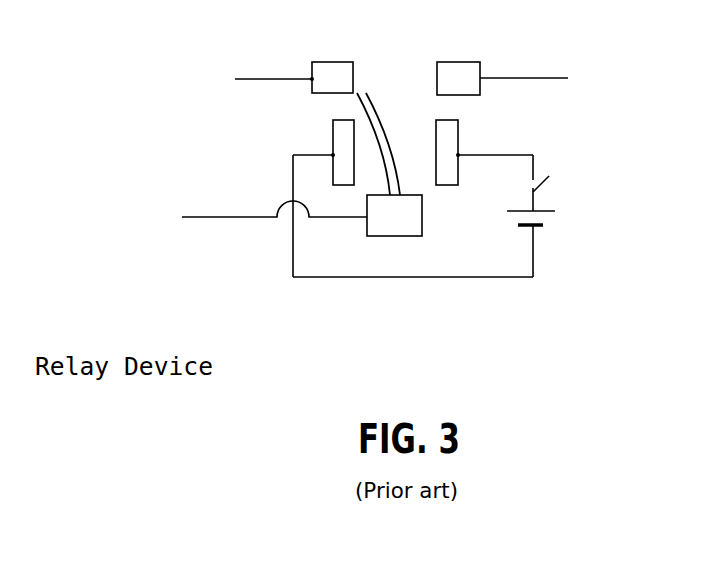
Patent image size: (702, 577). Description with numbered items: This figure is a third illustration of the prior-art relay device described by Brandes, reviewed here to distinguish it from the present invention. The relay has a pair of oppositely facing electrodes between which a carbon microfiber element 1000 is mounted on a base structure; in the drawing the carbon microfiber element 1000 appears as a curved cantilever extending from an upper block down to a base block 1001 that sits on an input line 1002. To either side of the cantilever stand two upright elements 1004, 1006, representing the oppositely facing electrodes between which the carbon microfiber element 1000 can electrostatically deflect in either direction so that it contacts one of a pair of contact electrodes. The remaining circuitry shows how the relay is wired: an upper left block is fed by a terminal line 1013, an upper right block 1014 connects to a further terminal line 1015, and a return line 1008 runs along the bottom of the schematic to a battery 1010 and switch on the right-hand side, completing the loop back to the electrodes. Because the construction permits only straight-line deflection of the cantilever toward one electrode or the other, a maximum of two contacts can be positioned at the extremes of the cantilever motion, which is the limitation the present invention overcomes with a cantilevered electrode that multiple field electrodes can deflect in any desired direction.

The carbon microfiber element 1000 is at (376, 97).
The relay armature block 1001 is at (414, 212).
The input line 1002 is at (218, 219).
The left contact / coil element 1004 is at (332, 132).
The right contact / coil element 1006 is at (458, 132).
The return line 1008 is at (477, 278).
The battery 1010 is at (548, 213).
The left terminal line 1013 is at (244, 78).
The upper right block 1014 is at (455, 70).
The right terminal line 1015 is at (558, 82).